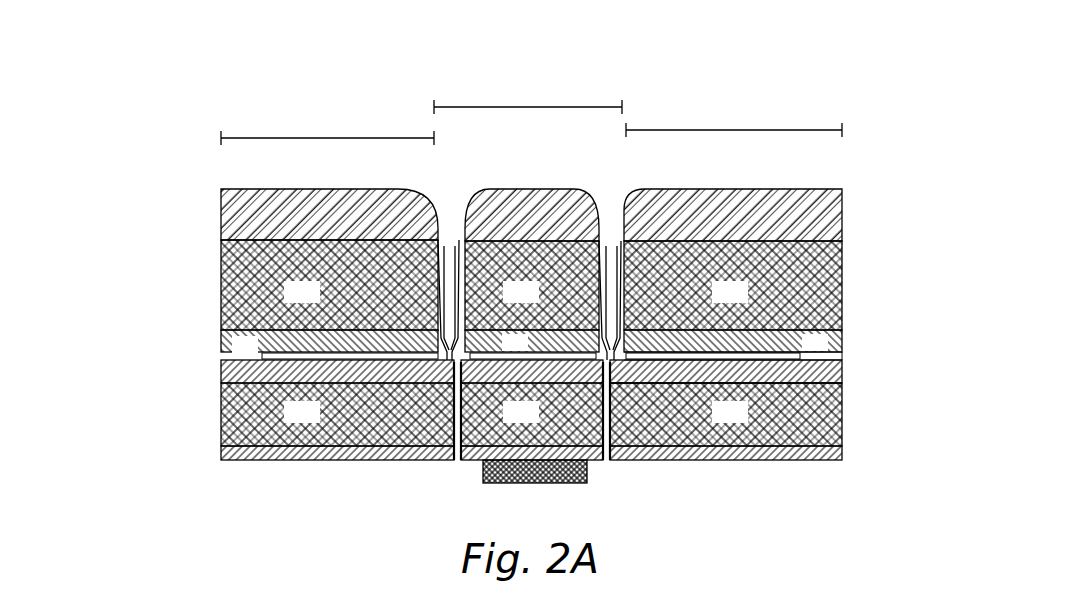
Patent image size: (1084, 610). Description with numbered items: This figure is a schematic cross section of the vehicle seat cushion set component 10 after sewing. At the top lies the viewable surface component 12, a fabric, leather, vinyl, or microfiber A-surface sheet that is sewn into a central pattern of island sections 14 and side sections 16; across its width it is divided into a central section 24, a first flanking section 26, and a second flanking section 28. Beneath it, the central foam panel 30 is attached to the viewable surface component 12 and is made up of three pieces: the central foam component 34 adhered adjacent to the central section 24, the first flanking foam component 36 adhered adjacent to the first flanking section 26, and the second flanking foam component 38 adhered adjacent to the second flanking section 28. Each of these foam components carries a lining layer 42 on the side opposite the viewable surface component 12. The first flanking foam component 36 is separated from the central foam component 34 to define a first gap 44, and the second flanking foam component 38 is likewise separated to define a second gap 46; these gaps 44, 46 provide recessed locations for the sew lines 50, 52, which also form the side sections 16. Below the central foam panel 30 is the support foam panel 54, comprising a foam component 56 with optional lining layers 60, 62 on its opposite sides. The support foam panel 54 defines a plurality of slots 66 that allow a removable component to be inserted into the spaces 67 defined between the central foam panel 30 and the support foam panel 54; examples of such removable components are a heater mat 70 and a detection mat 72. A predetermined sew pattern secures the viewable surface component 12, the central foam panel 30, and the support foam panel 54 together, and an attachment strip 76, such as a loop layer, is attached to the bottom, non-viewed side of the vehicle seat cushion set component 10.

The vehicle seat cushion set component 10 is at (830, 102).
The viewable surface component 12 is at (208, 182).
The island sections 14 is at (537, 190).
The side sections 16 is at (268, 210).
The central section 24 is at (563, 107).
The first flanking section 26 is at (313, 138).
The second flanking section 28 is at (742, 130).
The central foam panel 30 is at (214, 242).
The central foam component 34 is at (532, 285).
The first flanking foam component 36 is at (329, 285).
The second flanking foam component 38 is at (733, 285).
The lining layer 42 is at (531, 343).
The first gap 44 is at (449, 258).
The second gap 46 is at (612, 258).
The sew line 50 is at (451, 426).
The sew line 52 is at (613, 427).
The support foam panel 54 is at (214, 360).
The foam component 56 is at (531, 414).
The lining layer 60 is at (232, 378).
The lining layer 62 is at (274, 450).
The slots 66 is at (456, 472).
The spaces 67 is at (296, 352).
The heater mat 70 is at (833, 387).
The detection mat 72 is at (763, 357).
The attachment strip 76 is at (535, 484).